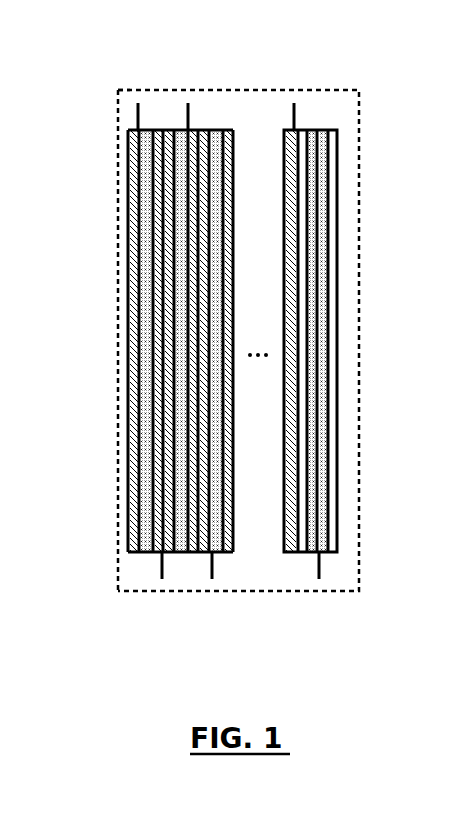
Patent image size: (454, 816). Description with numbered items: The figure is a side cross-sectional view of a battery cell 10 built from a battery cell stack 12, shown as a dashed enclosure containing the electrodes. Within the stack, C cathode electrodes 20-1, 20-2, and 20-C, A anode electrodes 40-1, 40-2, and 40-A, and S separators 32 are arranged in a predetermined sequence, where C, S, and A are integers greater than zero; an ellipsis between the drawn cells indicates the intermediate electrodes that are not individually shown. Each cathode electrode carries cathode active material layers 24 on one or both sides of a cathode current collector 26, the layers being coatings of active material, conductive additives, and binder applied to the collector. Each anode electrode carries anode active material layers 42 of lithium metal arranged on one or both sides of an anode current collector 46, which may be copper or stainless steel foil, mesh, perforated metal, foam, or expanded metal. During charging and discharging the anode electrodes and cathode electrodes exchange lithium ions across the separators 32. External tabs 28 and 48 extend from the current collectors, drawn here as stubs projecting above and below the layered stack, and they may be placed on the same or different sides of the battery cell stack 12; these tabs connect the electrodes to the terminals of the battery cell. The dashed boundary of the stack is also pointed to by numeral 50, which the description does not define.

The battery cell 10 is at (94, 66).
The battery cell stack 12 is at (347, 375).
The cathode electrode 20-1 is at (107, 351).
The cathode electrode 20-2 is at (213, 340).
The cathode electrode 20-C is at (339, 334).
The cathode active material layer 24 is at (128, 260).
The cathode current collector 26 is at (135, 317).
The external tab 28 is at (137, 115).
The separator 32 is at (151, 129).
The anode electrode 40-1 is at (112, 579).
The anode electrode 40-2 is at (208, 573).
The anode electrode 40-A is at (324, 571).
The anode active material layer 42 is at (150, 353).
The anode current collector 46 is at (160, 410).
The external tab 48 is at (161, 566).
The housing wall 50 is at (118, 203).